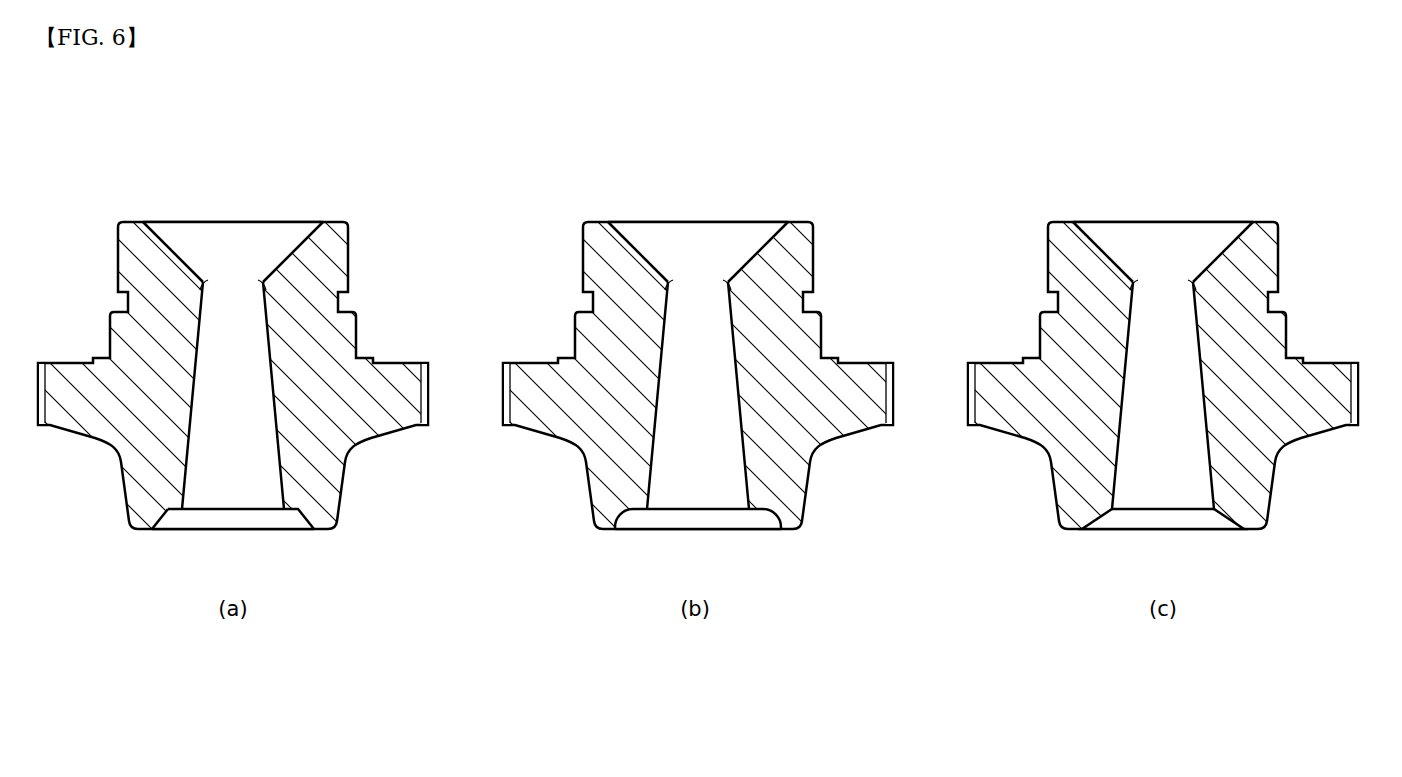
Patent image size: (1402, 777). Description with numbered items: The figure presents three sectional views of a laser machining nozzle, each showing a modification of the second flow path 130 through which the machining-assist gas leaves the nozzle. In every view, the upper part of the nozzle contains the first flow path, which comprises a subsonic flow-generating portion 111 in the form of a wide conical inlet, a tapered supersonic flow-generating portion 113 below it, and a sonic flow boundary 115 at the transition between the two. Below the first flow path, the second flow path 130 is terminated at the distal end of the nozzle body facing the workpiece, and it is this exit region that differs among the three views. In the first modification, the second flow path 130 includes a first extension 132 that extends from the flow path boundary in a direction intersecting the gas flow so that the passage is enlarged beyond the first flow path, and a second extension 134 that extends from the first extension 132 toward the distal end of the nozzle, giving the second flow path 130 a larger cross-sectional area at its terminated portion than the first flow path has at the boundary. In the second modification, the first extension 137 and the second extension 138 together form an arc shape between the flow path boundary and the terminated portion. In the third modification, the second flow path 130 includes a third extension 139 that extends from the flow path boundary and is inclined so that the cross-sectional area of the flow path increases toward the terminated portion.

The subsonic flow-generating portion 111 is at (243, 231).
The supersonic flow-generating portion 113 is at (252, 353).
The sonic flow boundary 115 is at (248, 280).
The second flow path 130 is at (289, 521).
The first extension 132 is at (172, 512).
The second extension 134 is at (162, 530).
The first extension 137 is at (642, 515).
The second extension 138 is at (625, 522).
The third extension 139 is at (1101, 513).